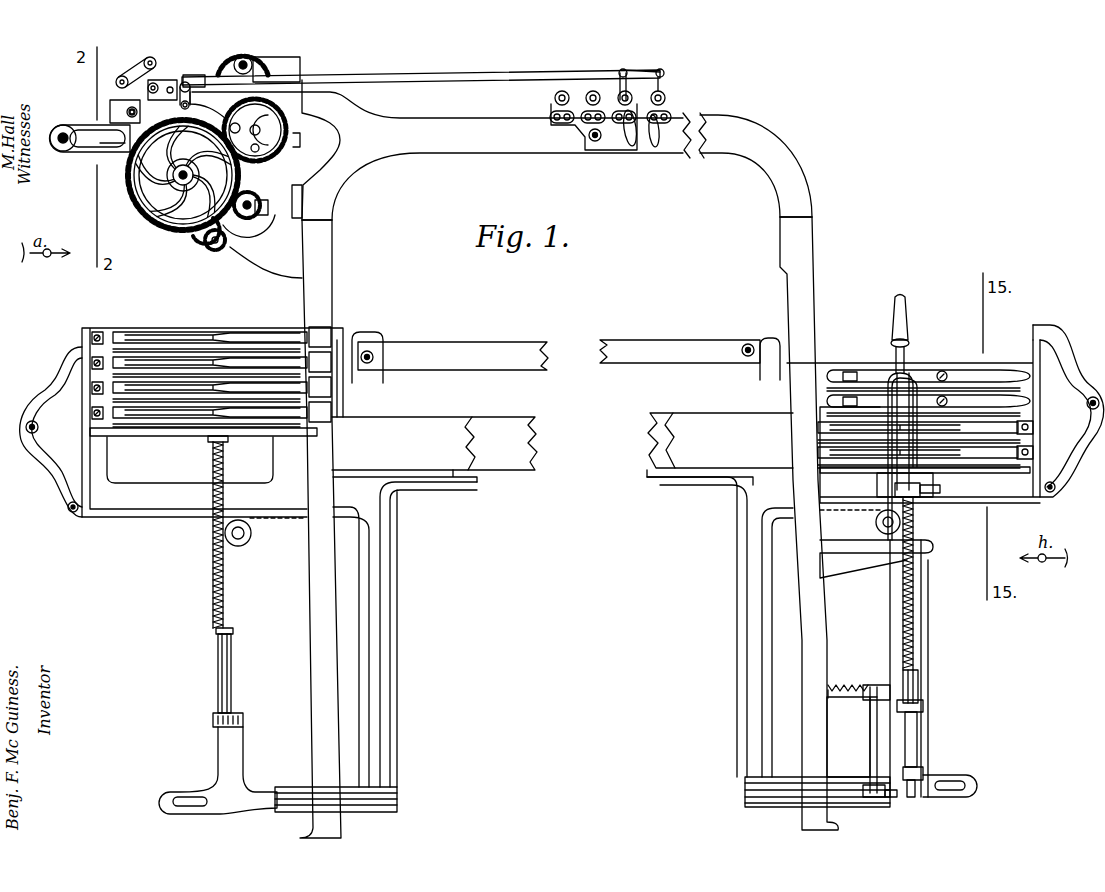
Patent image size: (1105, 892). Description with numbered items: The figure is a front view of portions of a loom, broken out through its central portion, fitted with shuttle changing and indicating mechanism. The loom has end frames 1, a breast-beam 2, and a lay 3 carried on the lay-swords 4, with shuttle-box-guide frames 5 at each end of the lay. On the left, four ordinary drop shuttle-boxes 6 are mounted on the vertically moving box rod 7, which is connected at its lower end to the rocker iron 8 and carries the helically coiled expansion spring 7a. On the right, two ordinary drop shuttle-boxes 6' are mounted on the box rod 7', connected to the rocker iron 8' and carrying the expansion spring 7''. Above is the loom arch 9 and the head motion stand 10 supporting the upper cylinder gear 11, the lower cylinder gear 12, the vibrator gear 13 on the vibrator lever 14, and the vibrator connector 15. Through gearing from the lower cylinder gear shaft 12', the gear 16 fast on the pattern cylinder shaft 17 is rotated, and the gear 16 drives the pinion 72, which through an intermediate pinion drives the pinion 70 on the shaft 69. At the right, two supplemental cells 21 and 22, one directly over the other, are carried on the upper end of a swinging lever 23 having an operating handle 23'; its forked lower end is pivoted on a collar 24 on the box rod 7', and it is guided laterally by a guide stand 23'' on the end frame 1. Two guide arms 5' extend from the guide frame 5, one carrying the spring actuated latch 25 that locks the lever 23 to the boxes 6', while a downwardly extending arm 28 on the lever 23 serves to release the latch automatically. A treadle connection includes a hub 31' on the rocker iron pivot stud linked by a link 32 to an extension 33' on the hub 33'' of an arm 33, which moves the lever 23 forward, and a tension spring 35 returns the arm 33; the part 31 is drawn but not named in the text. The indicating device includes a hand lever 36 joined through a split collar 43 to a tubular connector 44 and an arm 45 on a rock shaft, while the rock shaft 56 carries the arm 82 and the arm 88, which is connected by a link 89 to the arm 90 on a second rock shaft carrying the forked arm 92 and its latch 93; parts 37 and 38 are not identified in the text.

The loom sides or end frames 1 is at (330, 295).
The breast-beam 2 is at (410, 465).
The lay 3 is at (497, 430).
The lay-swords 4 is at (384, 606).
The shuttle-box-guide frames 5 is at (562, 436).
The guide arms 5' is at (897, 519).
The change or drop shuttle-boxes 6 is at (211, 379).
The change or drop shuttle-boxes 6' is at (955, 426).
The box rod 7 is at (204, 670).
The box rod 7' is at (927, 710).
The helically coiled expansion spring 7'' is at (931, 583).
The helically coiled expansion spring 7a is at (213, 584).
The rocker iron 8 is at (218, 763).
The rocker iron 8' is at (960, 769).
The loom arch 9 is at (447, 156).
The head motion stand 10 is at (270, 66).
The upper cylinder gear 11 is at (250, 53).
The lower cylinder gear 12 is at (258, 233).
The lower cylinder gear shaft 12' is at (262, 192).
The vibrator gear 13 is at (282, 114).
The vibrator lever 14 is at (304, 155).
The vibrator connector 15 is at (318, 127).
The gear 16 is at (175, 200).
The pattern cylinder shaft 17 is at (170, 178).
The supplemental shuttle-box 21 is at (904, 385).
The supplemental shuttle-box 22 is at (912, 392).
The swinging lever 23 is at (907, 668).
The operating handle 23' is at (918, 322).
The guide stand 23'' is at (897, 550).
The collar 24 is at (922, 778).
The spring actuated latch 25 is at (925, 492).
The downwardly extending arm 28 is at (888, 479).
The base block 31 is at (862, 806).
The hub 31' is at (892, 808).
The link 32 is at (870, 750).
The arm 33 is at (869, 740).
The extension 33' is at (857, 702).
The hub 33'' is at (871, 704).
The helically coiled tension spring 35 is at (845, 684).
The hand lever 36 is at (656, 72).
The lever 37 is at (641, 112).
The plate 38 is at (586, 131).
The split collar 43 is at (626, 71).
The connector 44 is at (358, 76).
The arm 45 is at (186, 100).
The rock shaft 56 is at (130, 115).
The shaft 69 is at (198, 232).
The pinion 70 is at (168, 220).
The pinion 72 is at (210, 245).
The arm 82 is at (118, 157).
The arm 88 is at (120, 103).
The link 89 is at (136, 70).
The arm 90 is at (153, 82).
The forked arm 92 is at (160, 80).
The latch or pawl 93 is at (185, 82).